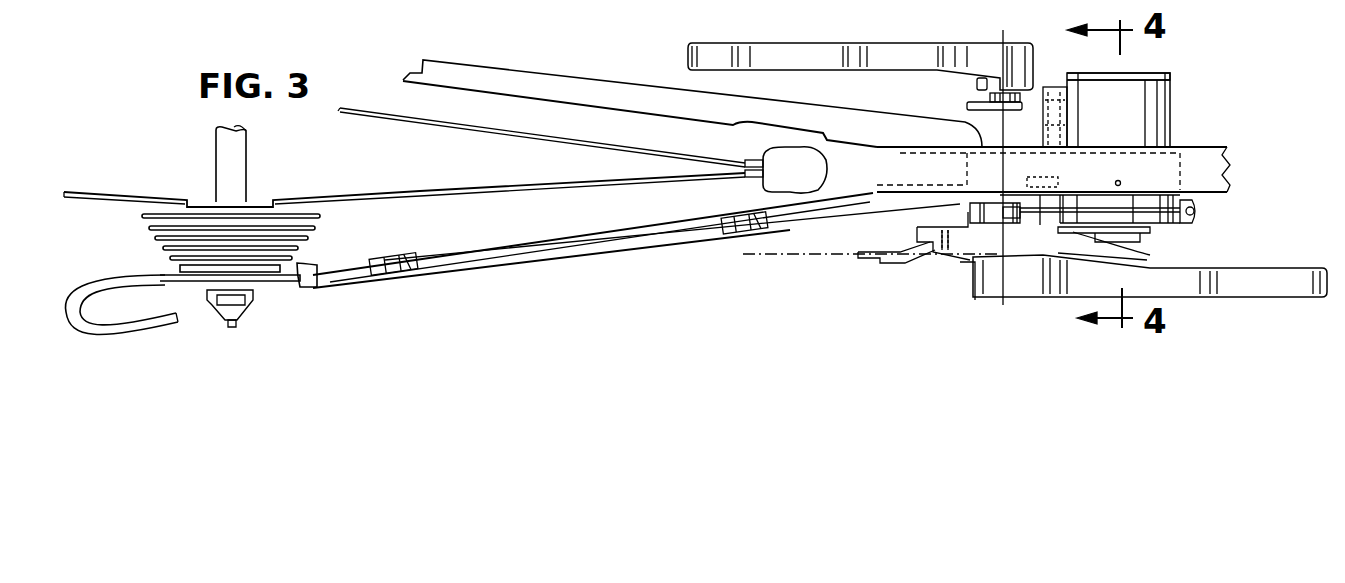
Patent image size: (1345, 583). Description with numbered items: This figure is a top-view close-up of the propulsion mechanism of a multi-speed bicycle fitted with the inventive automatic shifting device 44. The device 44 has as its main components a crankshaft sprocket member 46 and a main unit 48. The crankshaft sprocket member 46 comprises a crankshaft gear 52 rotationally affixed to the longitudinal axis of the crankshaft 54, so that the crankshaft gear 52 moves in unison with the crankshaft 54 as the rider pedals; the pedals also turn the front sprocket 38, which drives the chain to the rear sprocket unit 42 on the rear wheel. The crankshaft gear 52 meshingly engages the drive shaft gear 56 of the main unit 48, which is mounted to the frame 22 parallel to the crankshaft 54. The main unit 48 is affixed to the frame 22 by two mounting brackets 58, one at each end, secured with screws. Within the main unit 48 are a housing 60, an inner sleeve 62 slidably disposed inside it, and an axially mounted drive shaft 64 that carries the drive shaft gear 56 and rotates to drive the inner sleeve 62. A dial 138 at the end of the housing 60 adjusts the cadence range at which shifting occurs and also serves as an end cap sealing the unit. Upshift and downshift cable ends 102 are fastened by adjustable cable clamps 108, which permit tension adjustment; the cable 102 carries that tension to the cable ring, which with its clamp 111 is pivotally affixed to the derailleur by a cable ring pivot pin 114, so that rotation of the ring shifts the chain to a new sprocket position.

The frame 22 is at (607, 93).
The front sprocket 38 is at (868, 262).
The rear sprocket unit 42 is at (138, 208).
The device 44 is at (800, 186).
The crankshaft sprocket member 46 is at (962, 270).
The main unit 48 is at (1170, 135).
The crankshaft gear 52 is at (925, 260).
The crankshaft 54 is at (992, 43).
The drive shaft gear 56 is at (1150, 236).
The mounting bracket 58 is at (1055, 87).
The housing 60 is at (1185, 115).
The inner sleeve 62 is at (778, 55).
The drive shaft 64 is at (1150, 242).
The cable end 102 is at (168, 330).
The adjustable cable clamp 108 is at (1200, 213).
The clamp 111 is at (286, 0).
The cable ring pivot pin 114 is at (188, 11).
The dial 138 is at (1170, 80).